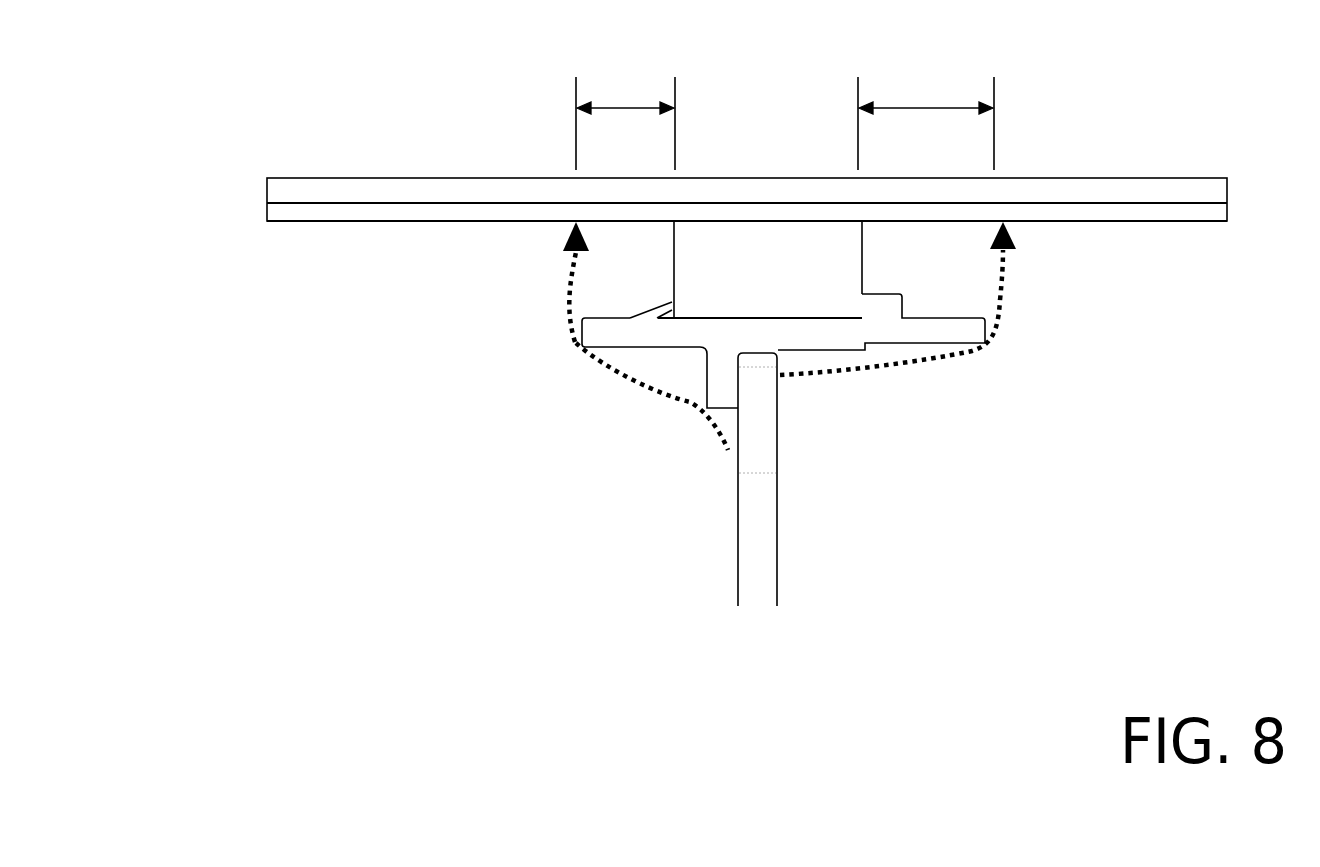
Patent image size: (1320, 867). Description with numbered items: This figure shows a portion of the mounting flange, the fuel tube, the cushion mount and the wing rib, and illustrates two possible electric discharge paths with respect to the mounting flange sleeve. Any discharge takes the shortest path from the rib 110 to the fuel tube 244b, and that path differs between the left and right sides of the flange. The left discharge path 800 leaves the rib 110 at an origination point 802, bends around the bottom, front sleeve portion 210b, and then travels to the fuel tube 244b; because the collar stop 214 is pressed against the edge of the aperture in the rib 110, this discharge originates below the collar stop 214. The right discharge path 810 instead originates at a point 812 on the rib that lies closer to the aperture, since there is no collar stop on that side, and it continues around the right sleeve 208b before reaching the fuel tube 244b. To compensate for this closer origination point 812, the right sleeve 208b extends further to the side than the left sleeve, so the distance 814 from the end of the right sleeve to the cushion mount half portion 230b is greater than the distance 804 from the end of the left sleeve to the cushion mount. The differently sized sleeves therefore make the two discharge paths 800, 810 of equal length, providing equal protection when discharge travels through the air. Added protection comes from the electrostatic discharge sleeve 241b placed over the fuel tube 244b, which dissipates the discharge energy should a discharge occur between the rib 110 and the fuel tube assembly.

The fuel tube 244b is at (317, 197).
The electrostatic discharge sleeve 241b is at (482, 222).
The distance from end of left sleeve to cushion mount 804 is at (625, 104).
The distance from end of right sleeve to cushion mount 814 is at (926, 102).
The cushion mount half portion 230b is at (725, 277).
The front sleeve portion 210b is at (578, 343).
The right sleeve 208b is at (972, 334).
The collar stop 214 is at (704, 392).
The rib 110 is at (738, 540).
The left discharge path 800 is at (627, 381).
The origination point 802 is at (731, 457).
The right discharge path 810 is at (881, 374).
The origination point of right discharge path 812 is at (783, 382).